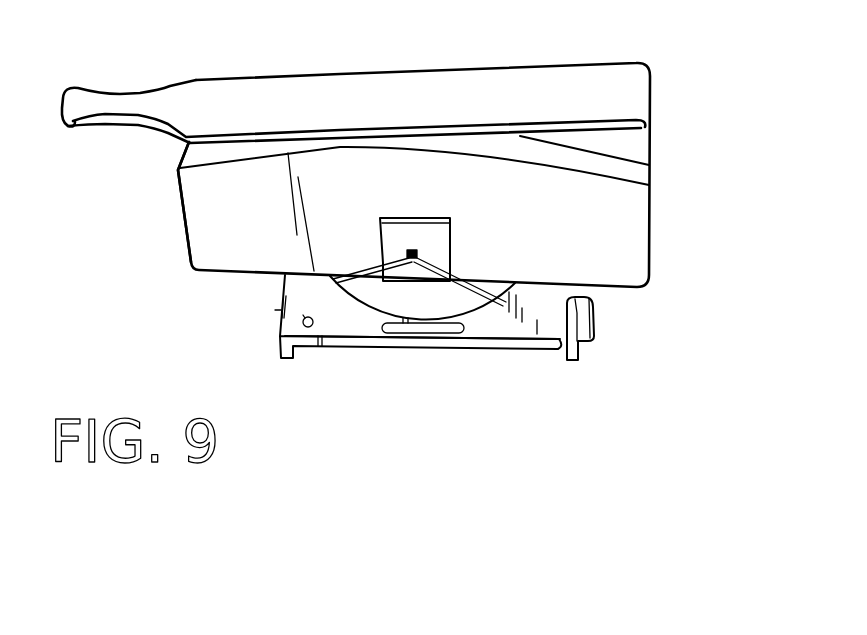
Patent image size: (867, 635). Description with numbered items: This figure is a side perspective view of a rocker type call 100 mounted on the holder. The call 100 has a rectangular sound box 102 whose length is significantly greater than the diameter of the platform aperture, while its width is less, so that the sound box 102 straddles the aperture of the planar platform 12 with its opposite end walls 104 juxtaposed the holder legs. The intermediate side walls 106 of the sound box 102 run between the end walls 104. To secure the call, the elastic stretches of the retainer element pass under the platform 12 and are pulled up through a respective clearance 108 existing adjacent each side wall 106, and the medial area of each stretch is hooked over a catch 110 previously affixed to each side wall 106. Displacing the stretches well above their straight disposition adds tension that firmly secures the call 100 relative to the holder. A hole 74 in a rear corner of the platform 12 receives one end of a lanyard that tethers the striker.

The rocker type call 100 is at (529, 60).
The rectangular sound box 102 is at (608, 233).
The end walls 104 is at (183, 212).
The side walls 106 is at (242, 224).
The clearance 108 is at (450, 299).
The catch 110 is at (416, 253).
The planar platform 12 is at (538, 325).
The hole 74 is at (311, 326).